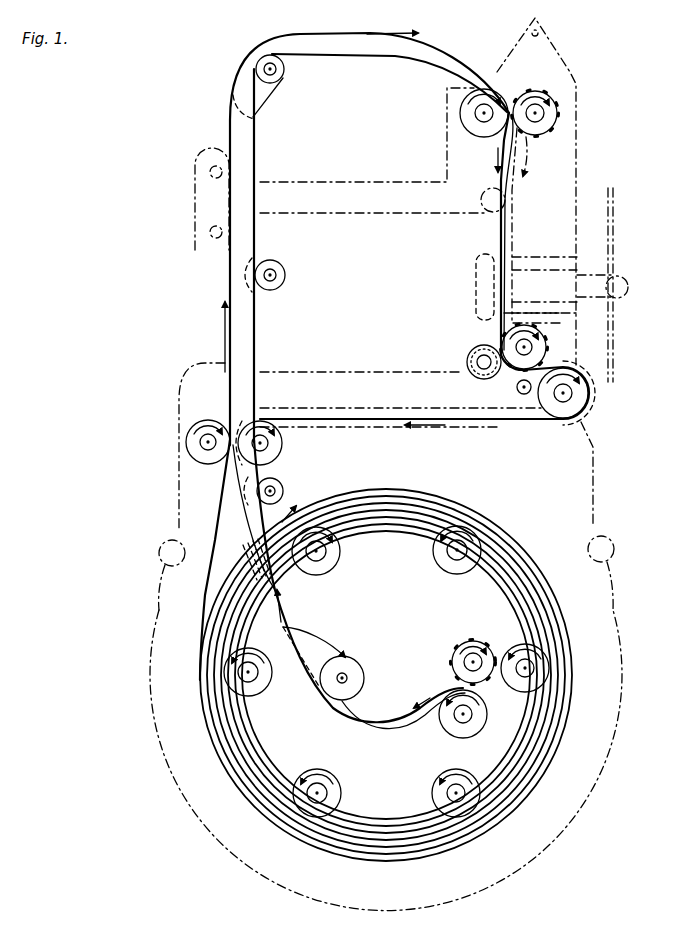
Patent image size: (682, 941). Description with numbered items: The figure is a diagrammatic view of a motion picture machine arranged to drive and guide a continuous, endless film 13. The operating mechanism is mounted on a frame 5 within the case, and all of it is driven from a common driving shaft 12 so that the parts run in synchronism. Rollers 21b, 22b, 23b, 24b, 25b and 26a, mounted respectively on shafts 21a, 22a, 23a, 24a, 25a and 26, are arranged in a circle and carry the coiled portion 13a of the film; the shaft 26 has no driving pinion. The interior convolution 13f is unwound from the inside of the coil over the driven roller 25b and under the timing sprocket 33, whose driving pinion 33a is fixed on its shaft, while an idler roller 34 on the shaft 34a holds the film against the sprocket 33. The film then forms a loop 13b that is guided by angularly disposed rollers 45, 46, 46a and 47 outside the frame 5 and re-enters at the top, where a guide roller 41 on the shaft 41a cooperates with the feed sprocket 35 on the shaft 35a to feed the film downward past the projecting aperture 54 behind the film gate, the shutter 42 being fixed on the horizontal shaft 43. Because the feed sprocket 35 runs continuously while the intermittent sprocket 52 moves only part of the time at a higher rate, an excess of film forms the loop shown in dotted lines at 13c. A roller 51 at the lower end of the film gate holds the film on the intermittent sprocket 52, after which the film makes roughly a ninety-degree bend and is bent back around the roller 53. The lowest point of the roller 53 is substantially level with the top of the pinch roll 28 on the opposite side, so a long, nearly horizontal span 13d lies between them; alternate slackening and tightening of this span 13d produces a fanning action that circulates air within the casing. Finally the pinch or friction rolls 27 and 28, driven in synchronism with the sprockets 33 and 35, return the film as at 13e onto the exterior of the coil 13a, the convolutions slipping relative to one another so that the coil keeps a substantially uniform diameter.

The frame 5 is at (200, 207).
The driving shaft 12 is at (517, 389).
The endless film 13 is at (369, 65).
The coiled portion of the film 13a is at (410, 492).
The loop of film 13b is at (245, 233).
The excess film loop 13c is at (517, 185).
The span of film 13d is at (590, 388).
The film section 13e is at (217, 530).
The interior convolution of the coil 13f is at (391, 718).
The shaft 21a is at (318, 551).
The roller 21b is at (320, 570).
The shaft 22a is at (254, 690).
The roller 22b is at (255, 660).
The shaft 23a is at (322, 797).
The roller 23b is at (336, 789).
The shaft 24a is at (447, 793).
The roller 24b is at (472, 780).
The shaft 25a is at (525, 660).
The roller 25b is at (524, 690).
The shaft 26 is at (455, 562).
The roller 26a is at (470, 565).
The pinch roll 27 is at (195, 446).
The pinch roll 28 is at (276, 453).
The timing sprocket 33 is at (455, 659).
The driving pinion 33a is at (470, 655).
The idler roller 34 is at (452, 722).
The shaft 34a is at (466, 716).
The feed sprocket 35 is at (553, 112).
The shaft 35a is at (540, 116).
The guide roller 41 is at (474, 122).
The shaft 41a is at (478, 114).
The shutter 42 is at (615, 232).
The horizontal shaft 43 is at (628, 289).
The roller 45 is at (350, 672).
The roller 46 is at (285, 490).
The roller 46a is at (276, 283).
The roller 47 is at (274, 76).
The roller 51 is at (469, 360).
The intermittent sprocket 52 is at (534, 343).
The roller 53 is at (575, 402).
The projecting aperture 54 is at (535, 287).